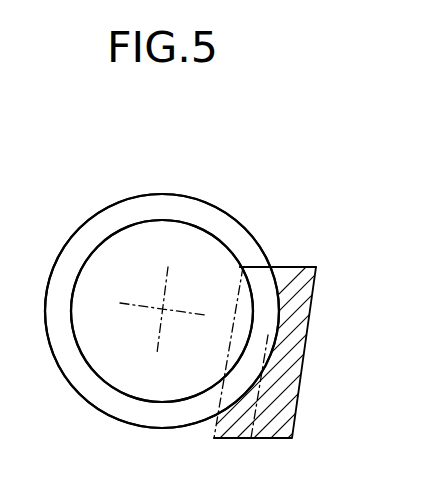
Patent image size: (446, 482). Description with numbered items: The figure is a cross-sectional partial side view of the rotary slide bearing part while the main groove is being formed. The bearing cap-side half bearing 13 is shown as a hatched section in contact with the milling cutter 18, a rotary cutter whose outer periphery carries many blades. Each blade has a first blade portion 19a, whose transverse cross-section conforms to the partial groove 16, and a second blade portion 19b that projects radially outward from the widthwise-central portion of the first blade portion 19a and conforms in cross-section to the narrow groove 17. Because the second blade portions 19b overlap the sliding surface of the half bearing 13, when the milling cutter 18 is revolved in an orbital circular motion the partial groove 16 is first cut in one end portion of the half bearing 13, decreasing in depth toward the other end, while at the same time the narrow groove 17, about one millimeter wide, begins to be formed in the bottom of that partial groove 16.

The bearing cap-side half bearing 13 is at (309, 315).
The partial groove 16 is at (241, 268).
The narrow groove 17 is at (283, 268).
The milling cutter 18 is at (82, 200).
The first blade portion 19a is at (163, 220).
The second blade portion 19b is at (225, 210).